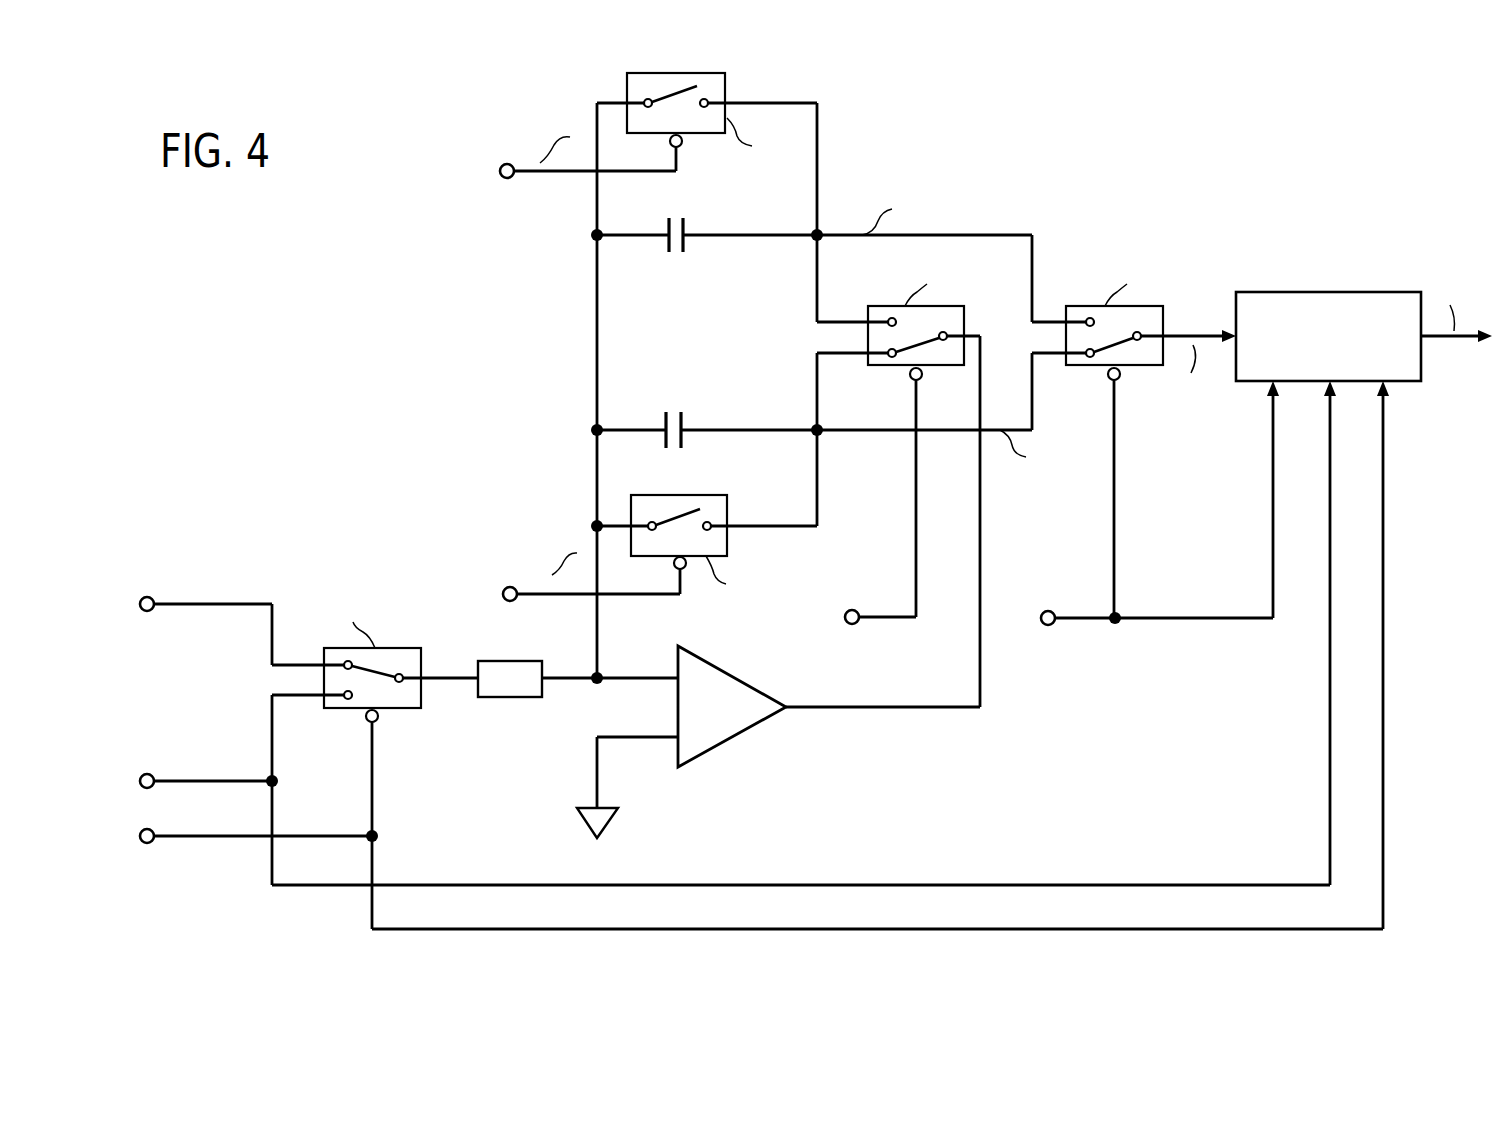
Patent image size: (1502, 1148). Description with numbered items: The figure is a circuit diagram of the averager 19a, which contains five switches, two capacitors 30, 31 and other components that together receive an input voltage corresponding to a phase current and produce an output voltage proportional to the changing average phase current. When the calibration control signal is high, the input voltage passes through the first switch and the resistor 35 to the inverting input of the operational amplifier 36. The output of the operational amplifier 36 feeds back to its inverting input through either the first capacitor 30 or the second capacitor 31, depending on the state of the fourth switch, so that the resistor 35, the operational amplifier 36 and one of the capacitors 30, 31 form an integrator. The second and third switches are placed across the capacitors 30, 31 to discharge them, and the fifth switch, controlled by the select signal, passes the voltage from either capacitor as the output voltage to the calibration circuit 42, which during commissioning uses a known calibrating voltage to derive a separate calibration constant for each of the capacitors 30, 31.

The averager 19a is at (436, 317).
The first capacitor 30 is at (690, 252).
The second capacitor 31 is at (686, 440).
The resistor 35 is at (488, 661).
The operational amplifier 36 is at (745, 738).
The calibration circuit 42 is at (1292, 292).